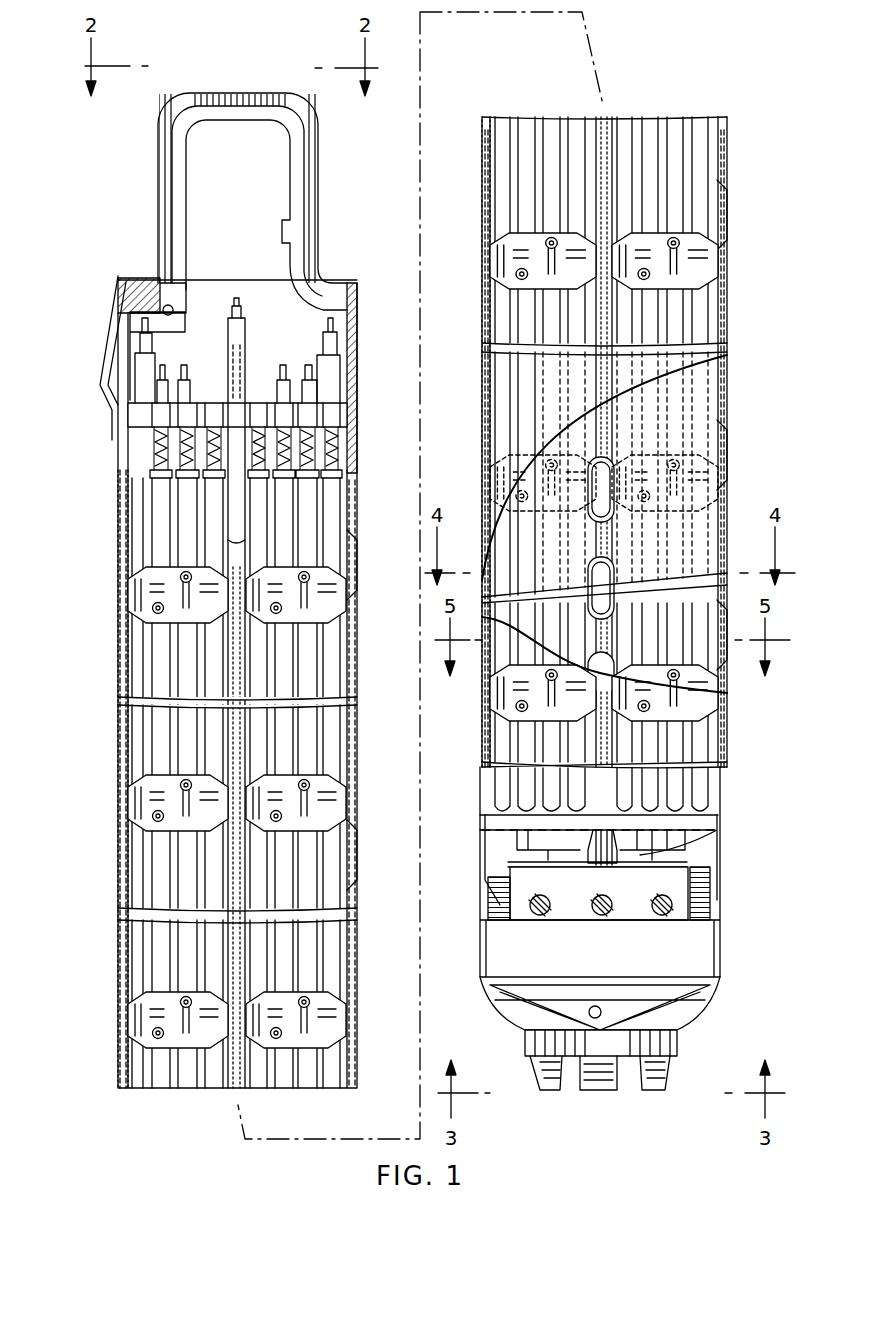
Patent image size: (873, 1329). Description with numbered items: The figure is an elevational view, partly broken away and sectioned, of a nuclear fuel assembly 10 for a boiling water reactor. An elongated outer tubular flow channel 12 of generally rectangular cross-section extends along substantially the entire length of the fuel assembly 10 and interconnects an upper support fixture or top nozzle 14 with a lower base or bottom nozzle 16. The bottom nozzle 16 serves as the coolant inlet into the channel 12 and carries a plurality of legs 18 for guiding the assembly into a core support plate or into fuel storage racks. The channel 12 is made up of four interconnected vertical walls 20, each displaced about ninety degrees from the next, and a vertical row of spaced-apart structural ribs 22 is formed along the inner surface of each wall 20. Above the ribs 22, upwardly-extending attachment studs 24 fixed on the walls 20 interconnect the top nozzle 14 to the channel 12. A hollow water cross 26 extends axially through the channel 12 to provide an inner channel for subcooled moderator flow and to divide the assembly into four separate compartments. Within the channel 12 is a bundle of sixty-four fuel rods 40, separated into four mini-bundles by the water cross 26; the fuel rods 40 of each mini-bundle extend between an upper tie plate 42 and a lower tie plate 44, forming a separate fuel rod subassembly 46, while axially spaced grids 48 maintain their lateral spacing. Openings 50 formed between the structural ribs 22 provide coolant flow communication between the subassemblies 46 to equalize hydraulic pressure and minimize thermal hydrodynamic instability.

The nuclear fuel assembly 10 is at (98, 231).
The outer tubular flow channel 12 is at (118, 712).
The top nozzle 14 is at (357, 310).
The bottom nozzle 16 is at (700, 1010).
The legs 18 is at (640, 1085).
The vertical walls 20 is at (118, 512).
The structural ribs 22 is at (118, 546).
The attachment studs 24 is at (330, 325).
The water cross 26 is at (222, 968).
The fuel rods 40 is at (160, 652).
The upper tie plate 42 is at (352, 405).
The lower tie plate 44 is at (500, 820).
The fuel rod subassembly 46 is at (128, 494).
The grids 48 is at (150, 604).
The openings 50 is at (357, 600).